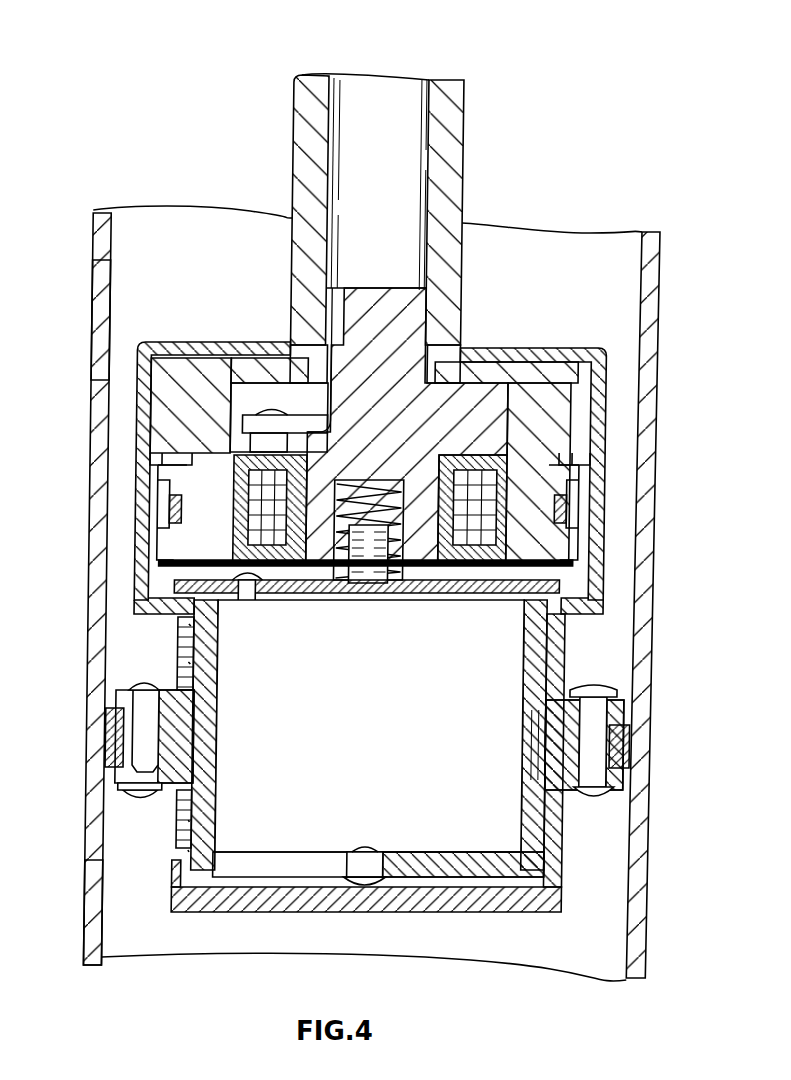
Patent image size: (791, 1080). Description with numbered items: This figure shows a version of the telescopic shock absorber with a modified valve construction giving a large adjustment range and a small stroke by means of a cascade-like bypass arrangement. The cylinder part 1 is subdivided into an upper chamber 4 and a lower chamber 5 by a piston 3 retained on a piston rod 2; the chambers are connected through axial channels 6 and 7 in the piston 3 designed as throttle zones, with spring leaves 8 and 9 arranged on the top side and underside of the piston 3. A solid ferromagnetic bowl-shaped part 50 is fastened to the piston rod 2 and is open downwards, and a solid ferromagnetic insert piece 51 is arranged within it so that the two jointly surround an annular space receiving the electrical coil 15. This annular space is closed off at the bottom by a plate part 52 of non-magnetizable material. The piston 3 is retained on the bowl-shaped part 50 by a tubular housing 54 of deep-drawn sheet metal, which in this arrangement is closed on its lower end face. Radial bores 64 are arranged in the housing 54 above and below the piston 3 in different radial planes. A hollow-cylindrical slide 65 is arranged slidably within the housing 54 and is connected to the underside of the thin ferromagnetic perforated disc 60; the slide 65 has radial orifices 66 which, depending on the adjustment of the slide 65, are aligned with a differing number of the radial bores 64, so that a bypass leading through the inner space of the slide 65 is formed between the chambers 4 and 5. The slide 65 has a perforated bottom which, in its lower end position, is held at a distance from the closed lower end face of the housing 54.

The cylinder part 1 is at (101, 247).
The piston rod 2 is at (310, 90).
The piston 3 is at (178, 765).
The upper chamber 4 is at (112, 283).
The lower chamber 5 is at (144, 912).
The axial channel 6 is at (634, 752).
The axial channel 7 is at (151, 701).
The spring leaf 8 is at (616, 705).
The spring leaf 9 is at (182, 795).
The electrical coil 15 is at (244, 524).
The bowl-shaped part 50 is at (578, 440).
The insert piece 51 is at (492, 410).
The plate part 52 is at (499, 553).
The tubular housing 54 is at (604, 370).
The perforated disc 60 is at (567, 598).
The radial bores 64 is at (194, 662).
The hollow-cylindrical slide 65 is at (184, 858).
The radial orifices 66 is at (219, 682).